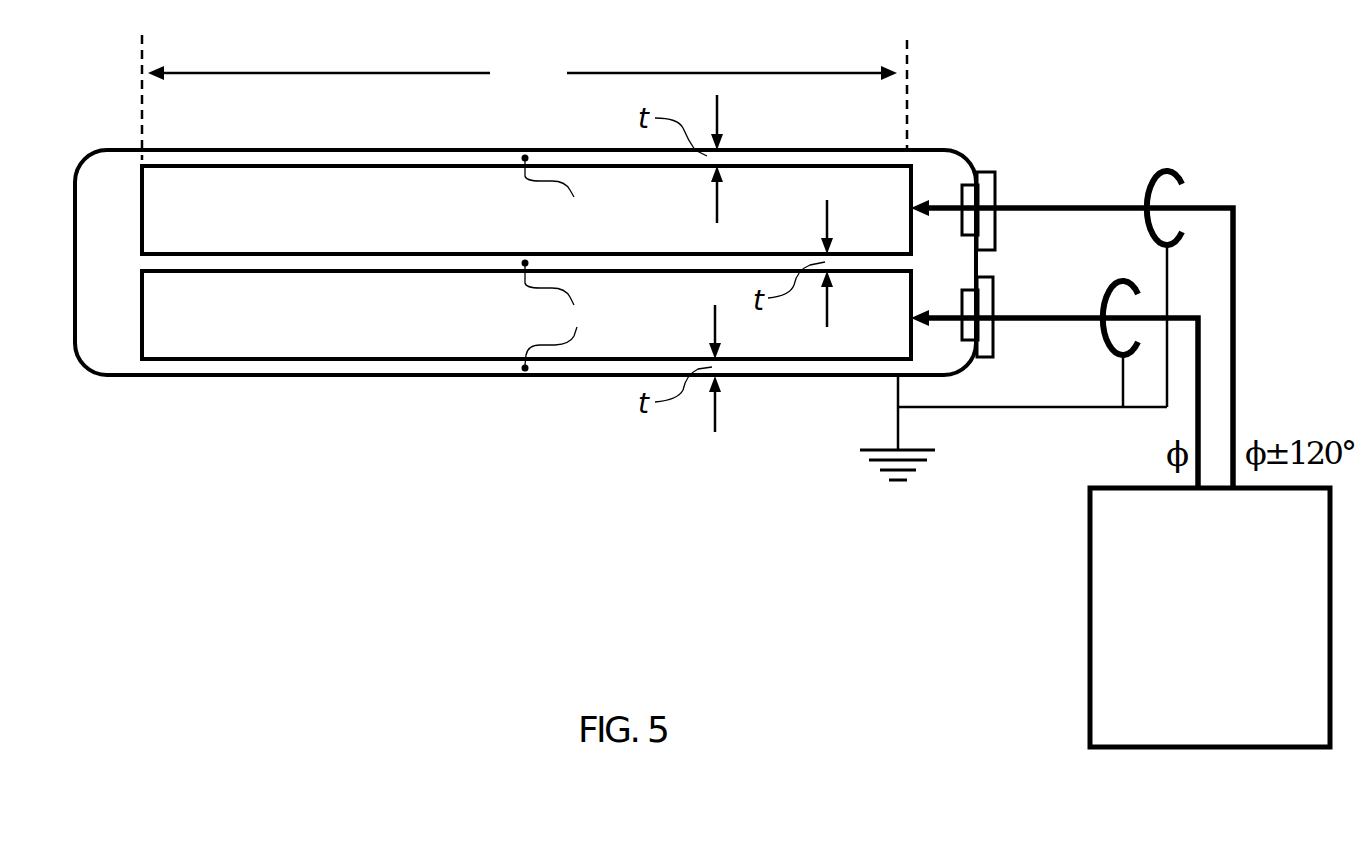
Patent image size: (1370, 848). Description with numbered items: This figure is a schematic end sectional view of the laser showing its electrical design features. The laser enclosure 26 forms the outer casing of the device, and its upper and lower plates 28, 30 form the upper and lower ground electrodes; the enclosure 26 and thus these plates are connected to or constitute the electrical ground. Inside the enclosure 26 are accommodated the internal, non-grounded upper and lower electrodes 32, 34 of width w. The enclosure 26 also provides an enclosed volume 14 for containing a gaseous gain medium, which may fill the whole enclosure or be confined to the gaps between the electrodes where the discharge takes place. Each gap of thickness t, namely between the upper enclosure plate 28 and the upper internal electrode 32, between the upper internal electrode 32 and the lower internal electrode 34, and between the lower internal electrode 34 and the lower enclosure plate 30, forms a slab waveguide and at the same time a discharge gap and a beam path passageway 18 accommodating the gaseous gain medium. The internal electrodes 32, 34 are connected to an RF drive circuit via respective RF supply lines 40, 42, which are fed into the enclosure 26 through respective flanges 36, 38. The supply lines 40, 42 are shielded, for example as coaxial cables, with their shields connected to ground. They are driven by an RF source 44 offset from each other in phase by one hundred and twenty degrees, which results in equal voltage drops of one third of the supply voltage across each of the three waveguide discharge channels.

The gain medium volume 14 is at (127, 222).
The beam path passageway 18 is at (333, 158).
The laser enclosure 26 is at (970, 157).
The upper enclosure plate 28 is at (879, 150).
The lower enclosure plate 30 is at (162, 376).
The upper internal electrode 32 is at (542, 227).
The lower internal electrode 34 is at (542, 332).
The RF lead flange 36 is at (997, 185).
The RF lead flange 38 is at (996, 335).
The RF supply line 40 is at (1086, 205).
The RF supply line 42 is at (1033, 315).
The RF source 44 is at (1320, 733).